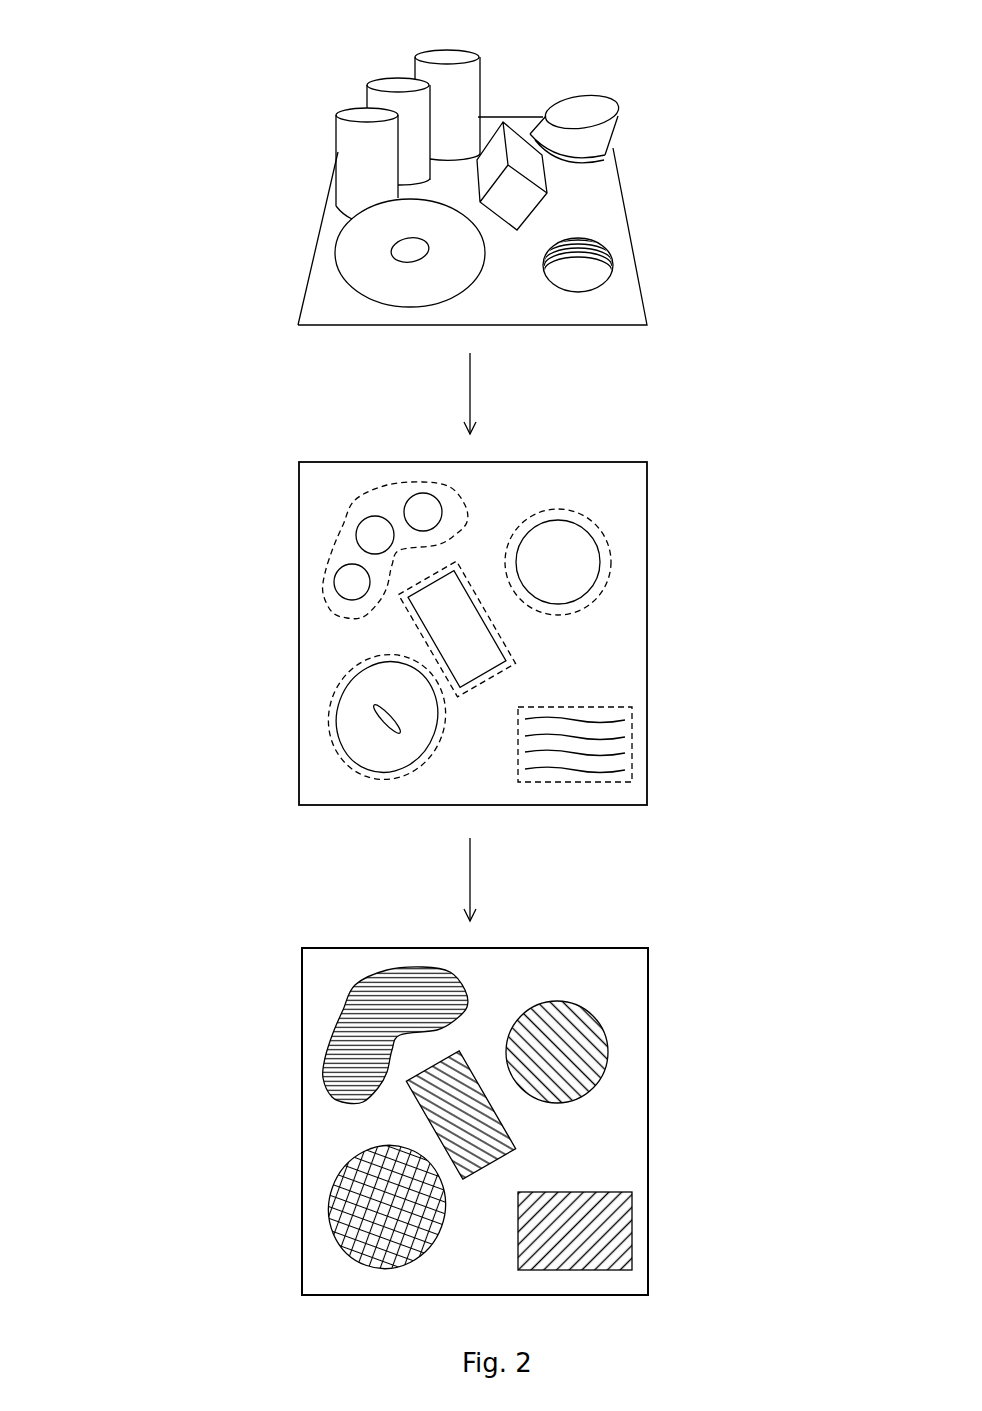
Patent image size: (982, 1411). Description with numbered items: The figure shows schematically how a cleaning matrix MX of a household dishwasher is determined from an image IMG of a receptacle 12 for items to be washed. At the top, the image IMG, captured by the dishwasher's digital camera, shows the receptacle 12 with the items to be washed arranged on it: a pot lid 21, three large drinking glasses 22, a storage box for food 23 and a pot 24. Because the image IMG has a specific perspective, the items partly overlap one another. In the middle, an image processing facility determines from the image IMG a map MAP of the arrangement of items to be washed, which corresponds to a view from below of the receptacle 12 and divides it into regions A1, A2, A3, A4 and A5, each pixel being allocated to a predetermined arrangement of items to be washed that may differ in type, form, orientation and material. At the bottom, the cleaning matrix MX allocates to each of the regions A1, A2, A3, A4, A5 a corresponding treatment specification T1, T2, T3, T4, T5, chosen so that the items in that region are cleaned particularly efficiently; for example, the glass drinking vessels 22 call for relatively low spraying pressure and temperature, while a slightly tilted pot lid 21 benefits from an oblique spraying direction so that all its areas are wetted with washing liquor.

The receptacle for items to be washed 12 is at (630, 216).
The pot lid 21 is at (328, 257).
The drinking glasses 22 is at (360, 97).
The storage box for food 23 is at (518, 118).
The pot 24 is at (616, 98).
The image IMG is at (167, 235).
The map of the arrangement of items to be washed MAP is at (162, 703).
The cleaning matrix MX is at (157, 1136).
The region A1 is at (330, 701).
The region A2 is at (326, 595).
The region A3 is at (517, 655).
The region A4 is at (612, 549).
The region A5 is at (632, 752).
The treatment specification T1 is at (330, 1190).
The treatment specification T2 is at (324, 1083).
The treatment specification T3 is at (517, 1150).
The treatment specification T4 is at (608, 1038).
The treatment specification T5 is at (632, 1241).